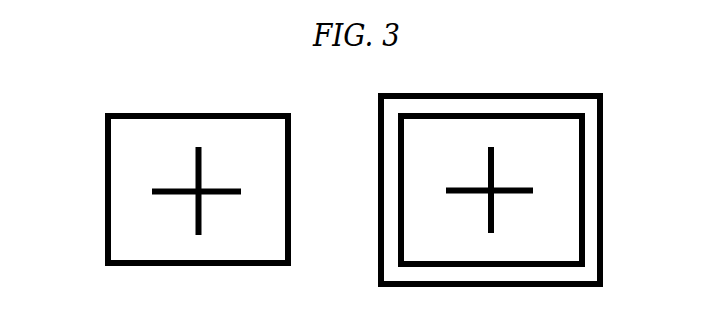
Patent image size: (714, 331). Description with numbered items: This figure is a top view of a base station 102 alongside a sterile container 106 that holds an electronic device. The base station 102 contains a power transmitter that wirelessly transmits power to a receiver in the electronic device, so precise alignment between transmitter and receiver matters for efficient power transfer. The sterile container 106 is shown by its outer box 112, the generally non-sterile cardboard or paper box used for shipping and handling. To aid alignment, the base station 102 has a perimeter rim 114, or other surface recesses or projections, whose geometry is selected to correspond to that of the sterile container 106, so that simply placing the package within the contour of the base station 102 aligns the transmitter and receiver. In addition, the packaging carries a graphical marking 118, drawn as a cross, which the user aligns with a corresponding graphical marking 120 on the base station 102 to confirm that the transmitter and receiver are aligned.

The base station 102 is at (615, 152).
The sterile container 106 is at (132, 160).
The outer box 112 is at (167, 133).
The perimeter rim 114 is at (507, 107).
The graphical marking 118 is at (210, 193).
The graphical marking 120 is at (513, 193).